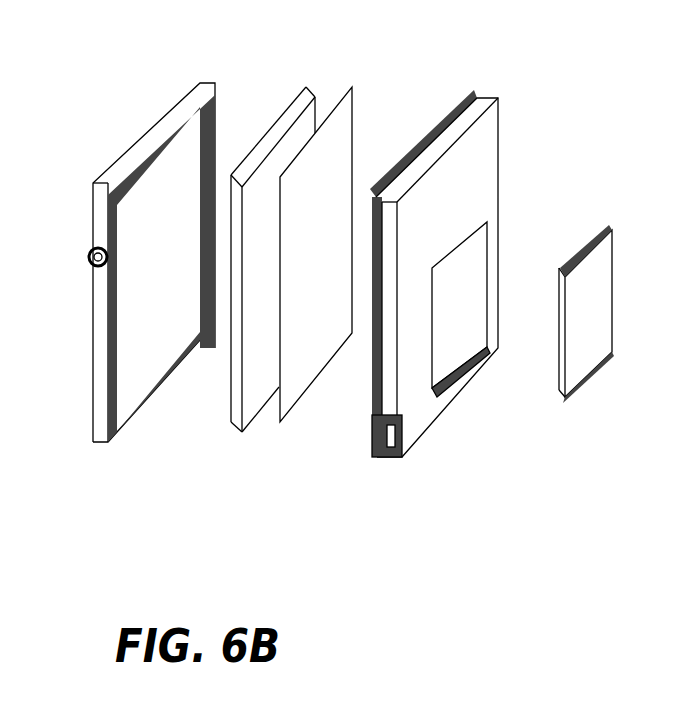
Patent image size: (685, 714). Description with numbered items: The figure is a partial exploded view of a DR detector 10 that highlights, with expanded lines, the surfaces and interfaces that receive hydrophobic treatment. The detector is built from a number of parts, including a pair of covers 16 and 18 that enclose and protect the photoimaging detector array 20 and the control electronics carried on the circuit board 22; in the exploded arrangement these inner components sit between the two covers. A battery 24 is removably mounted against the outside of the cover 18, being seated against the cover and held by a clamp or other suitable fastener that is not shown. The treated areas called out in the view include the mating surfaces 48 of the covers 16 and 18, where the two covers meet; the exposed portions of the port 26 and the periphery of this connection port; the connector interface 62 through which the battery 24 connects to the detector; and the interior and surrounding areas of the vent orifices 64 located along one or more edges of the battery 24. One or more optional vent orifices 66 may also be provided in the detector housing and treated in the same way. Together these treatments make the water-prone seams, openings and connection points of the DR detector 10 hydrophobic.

The DR detector 10 is at (636, 72).
The cover 16 is at (279, 286).
The cover 18 is at (467, 320).
The photoimaging detector array 20 is at (274, 424).
The circuit board 22 is at (232, 430).
The battery 24 is at (618, 329).
The port 26 is at (400, 458).
The mating surfaces 48 is at (193, 112).
The connector interface 62 is at (468, 371).
The vent orifices 64 is at (595, 232).
The vent orifices 66 is at (92, 264).